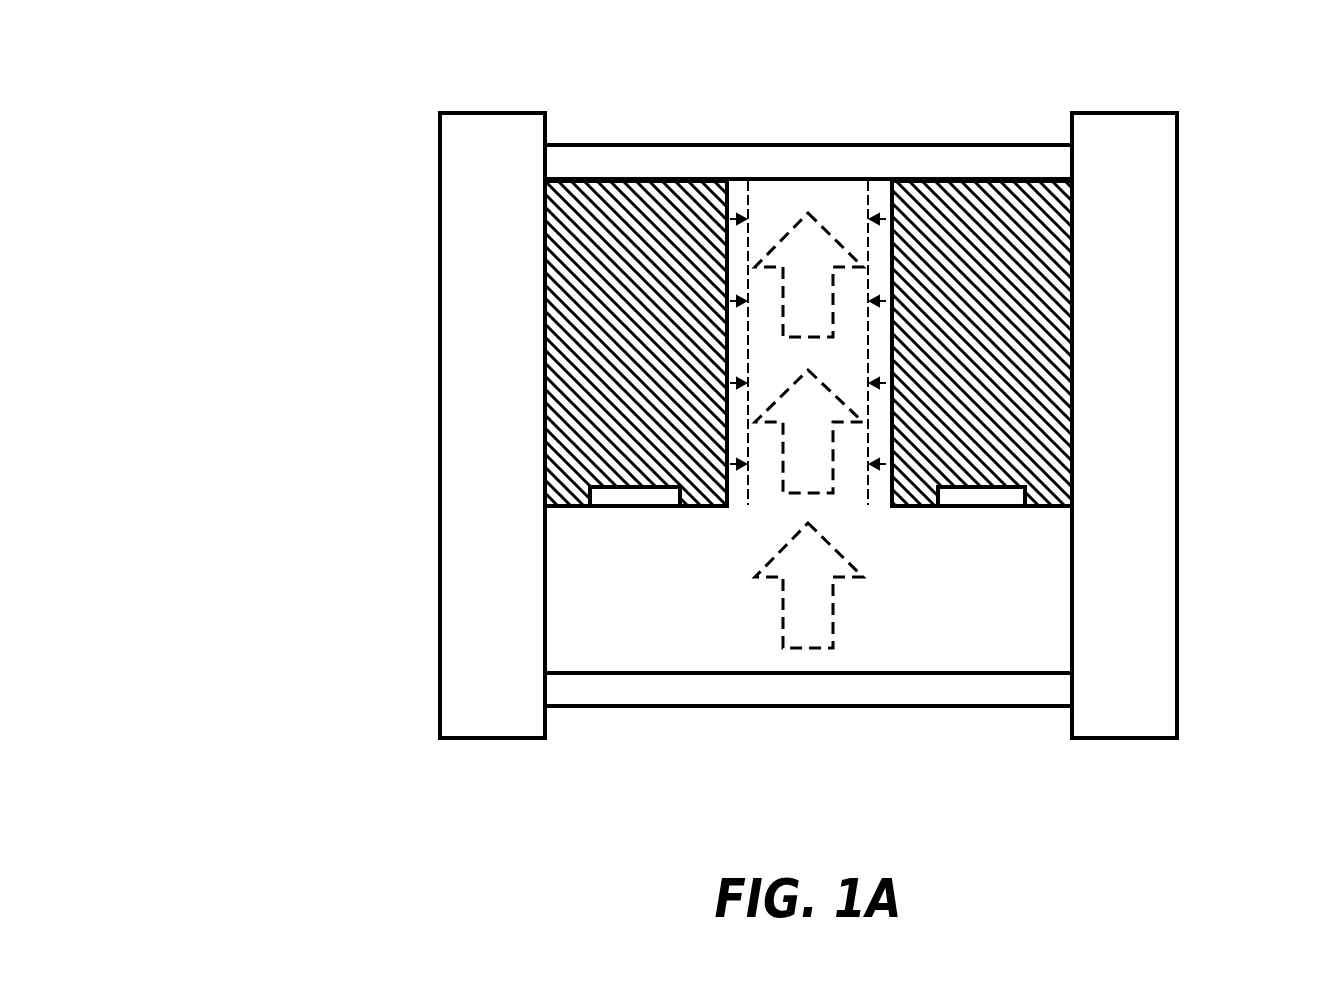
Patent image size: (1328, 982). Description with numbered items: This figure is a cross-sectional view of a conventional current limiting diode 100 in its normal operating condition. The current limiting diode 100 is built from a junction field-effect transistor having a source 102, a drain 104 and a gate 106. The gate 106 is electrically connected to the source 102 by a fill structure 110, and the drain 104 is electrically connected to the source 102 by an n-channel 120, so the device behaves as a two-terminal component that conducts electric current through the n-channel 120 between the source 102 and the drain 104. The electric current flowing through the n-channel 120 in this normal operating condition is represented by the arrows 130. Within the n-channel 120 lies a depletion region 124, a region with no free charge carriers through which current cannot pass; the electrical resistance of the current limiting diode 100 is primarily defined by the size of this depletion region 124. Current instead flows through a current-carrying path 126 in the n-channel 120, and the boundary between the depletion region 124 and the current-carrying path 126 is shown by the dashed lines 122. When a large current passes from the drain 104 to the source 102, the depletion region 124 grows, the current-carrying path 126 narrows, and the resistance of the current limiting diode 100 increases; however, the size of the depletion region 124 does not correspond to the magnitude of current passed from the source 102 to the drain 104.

The current limiting diode 100 is at (62, 32).
The source 102 is at (720, 160).
The drain 104 is at (763, 691).
The gate 106 is at (603, 498).
The fill structure 110 is at (542, 272).
The n-channel 120 is at (723, 647).
The dashed lines 122 is at (747, 497).
The depletion region 124 is at (880, 255).
The current-carrying path 126 is at (817, 193).
The arrows 130 is at (835, 598).